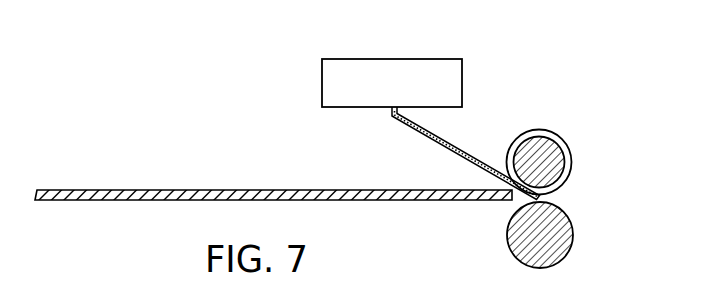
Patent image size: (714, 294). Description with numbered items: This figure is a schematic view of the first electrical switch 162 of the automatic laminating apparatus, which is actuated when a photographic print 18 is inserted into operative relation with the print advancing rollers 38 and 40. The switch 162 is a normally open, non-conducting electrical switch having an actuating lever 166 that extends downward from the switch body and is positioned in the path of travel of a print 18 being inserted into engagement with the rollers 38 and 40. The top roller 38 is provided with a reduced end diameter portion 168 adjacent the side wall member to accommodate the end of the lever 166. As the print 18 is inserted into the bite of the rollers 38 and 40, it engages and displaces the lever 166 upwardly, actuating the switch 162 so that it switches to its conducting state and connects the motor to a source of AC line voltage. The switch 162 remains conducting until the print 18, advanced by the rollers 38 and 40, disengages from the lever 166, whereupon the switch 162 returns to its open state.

The photograph or photographic print 18 is at (153, 190).
The top roller 38 is at (541, 130).
The print advancing roller 40 is at (571, 219).
The first electrical switch 162 is at (367, 50).
The actuating lever 166 is at (458, 150).
The reduced end diameter portion 168 is at (569, 177).